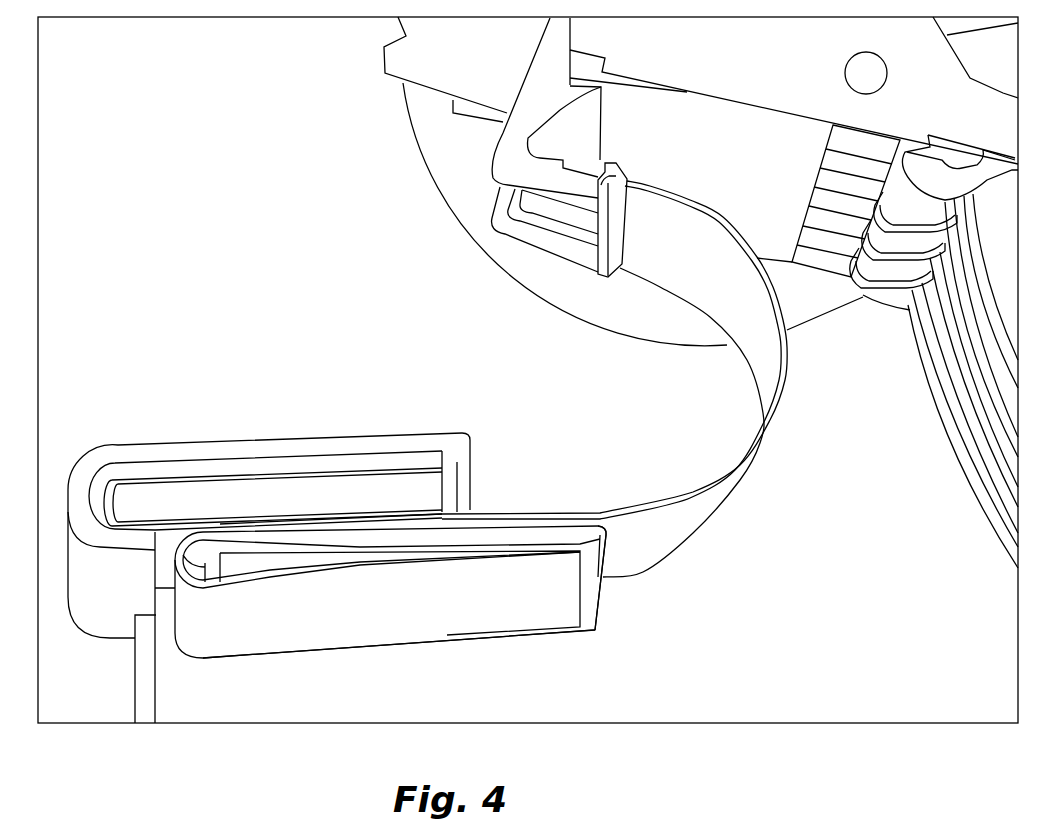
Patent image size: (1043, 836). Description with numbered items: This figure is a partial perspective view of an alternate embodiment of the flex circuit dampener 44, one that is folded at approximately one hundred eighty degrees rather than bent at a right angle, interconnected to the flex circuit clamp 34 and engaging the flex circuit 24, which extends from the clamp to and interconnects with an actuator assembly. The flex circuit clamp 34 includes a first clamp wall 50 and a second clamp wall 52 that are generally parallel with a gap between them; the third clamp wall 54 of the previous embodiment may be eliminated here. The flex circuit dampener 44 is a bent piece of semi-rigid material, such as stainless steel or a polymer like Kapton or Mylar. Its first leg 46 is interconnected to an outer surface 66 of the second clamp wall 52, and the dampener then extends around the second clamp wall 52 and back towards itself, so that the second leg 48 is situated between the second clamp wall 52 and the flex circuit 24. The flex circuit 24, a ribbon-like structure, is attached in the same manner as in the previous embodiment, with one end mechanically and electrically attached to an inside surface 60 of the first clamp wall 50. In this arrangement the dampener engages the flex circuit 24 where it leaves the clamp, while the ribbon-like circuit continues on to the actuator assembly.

The flex circuit 24 is at (165, 500).
The flex circuit clamp 34 is at (345, 400).
The flex circuit dampener 44 is at (423, 610).
The first leg 46 is at (370, 600).
The second leg 48 is at (410, 522).
The first clamp wall 50 is at (447, 437).
The second clamp wall 52 is at (607, 533).
The third clamp wall 54 is at (147, 665).
The inside surface 60 is at (377, 462).
The outer surface 66 is at (590, 605).